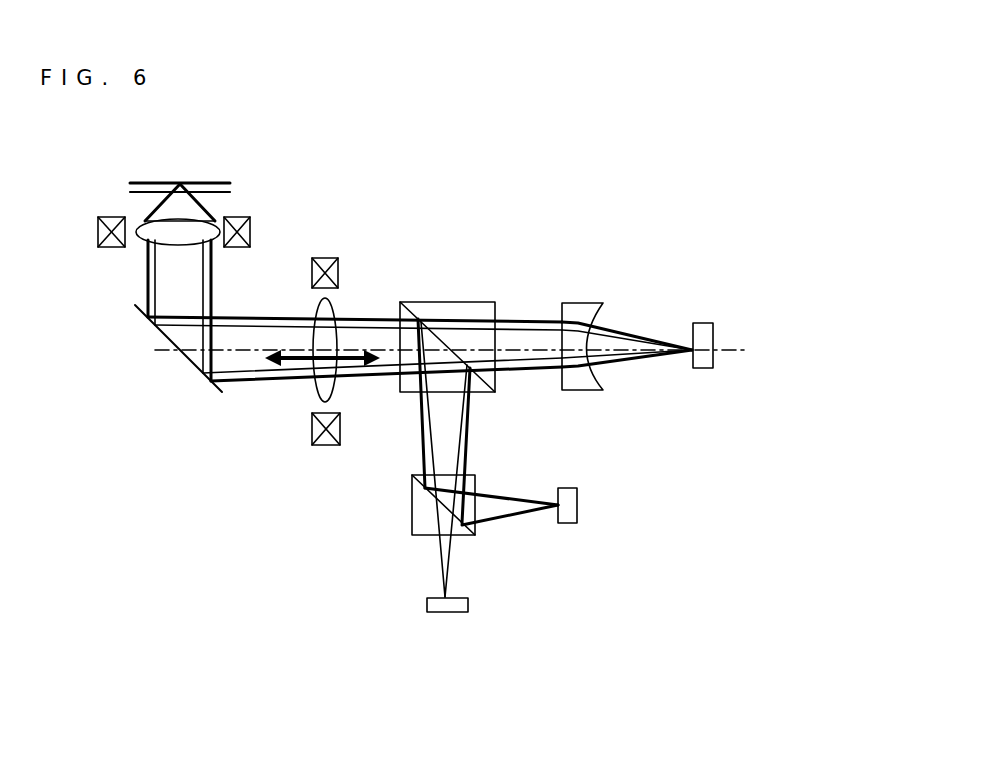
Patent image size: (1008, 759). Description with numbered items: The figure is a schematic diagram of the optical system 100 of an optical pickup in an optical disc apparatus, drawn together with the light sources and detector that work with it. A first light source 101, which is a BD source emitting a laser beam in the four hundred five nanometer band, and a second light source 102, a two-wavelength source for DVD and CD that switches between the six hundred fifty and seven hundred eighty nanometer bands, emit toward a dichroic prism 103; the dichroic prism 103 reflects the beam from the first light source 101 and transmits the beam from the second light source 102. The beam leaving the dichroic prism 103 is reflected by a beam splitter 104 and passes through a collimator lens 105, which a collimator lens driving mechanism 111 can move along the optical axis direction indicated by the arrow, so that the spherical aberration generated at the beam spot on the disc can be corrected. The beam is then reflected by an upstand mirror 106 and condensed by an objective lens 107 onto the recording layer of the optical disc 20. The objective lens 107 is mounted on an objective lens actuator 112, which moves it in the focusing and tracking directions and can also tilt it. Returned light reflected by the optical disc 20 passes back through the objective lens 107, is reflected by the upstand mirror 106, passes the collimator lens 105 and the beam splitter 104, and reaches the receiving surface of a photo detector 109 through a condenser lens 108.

The optical system 100 is at (635, 135).
The optical disc 20 is at (222, 185).
The first light source 101 is at (572, 507).
The second light source 102 is at (443, 612).
The dichroic prism 103 is at (478, 478).
The beam splitter 104 is at (447, 300).
The collimator lens 105 is at (328, 308).
The upstand mirror 106 is at (190, 367).
The objective lens 107 is at (177, 248).
The condenser lens 108 is at (580, 300).
The photo detector 109 is at (702, 322).
The collimator lens driving mechanism 111 is at (332, 255).
The objective lens actuator 112 is at (252, 220).